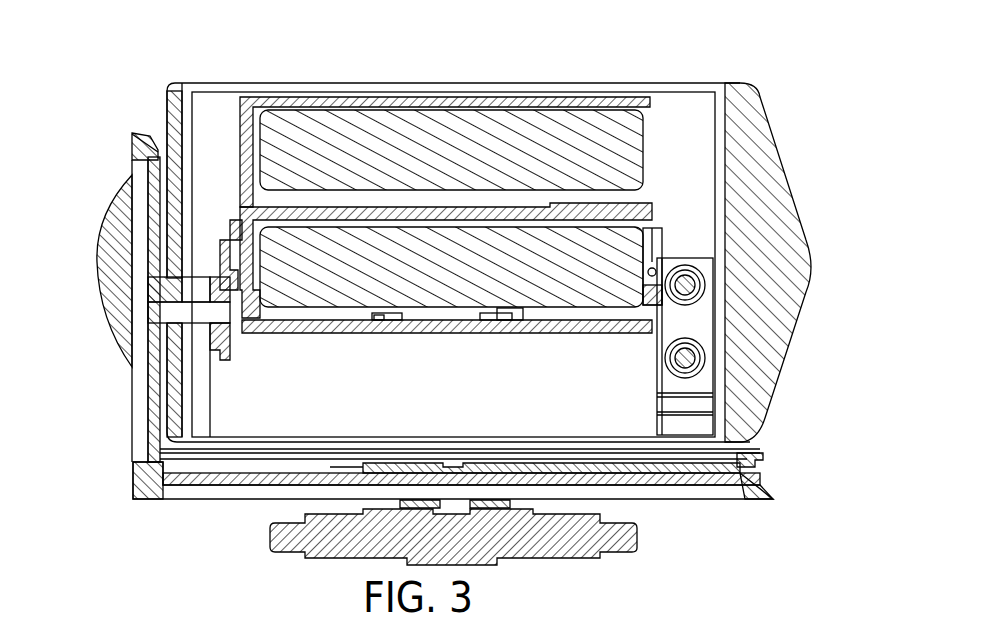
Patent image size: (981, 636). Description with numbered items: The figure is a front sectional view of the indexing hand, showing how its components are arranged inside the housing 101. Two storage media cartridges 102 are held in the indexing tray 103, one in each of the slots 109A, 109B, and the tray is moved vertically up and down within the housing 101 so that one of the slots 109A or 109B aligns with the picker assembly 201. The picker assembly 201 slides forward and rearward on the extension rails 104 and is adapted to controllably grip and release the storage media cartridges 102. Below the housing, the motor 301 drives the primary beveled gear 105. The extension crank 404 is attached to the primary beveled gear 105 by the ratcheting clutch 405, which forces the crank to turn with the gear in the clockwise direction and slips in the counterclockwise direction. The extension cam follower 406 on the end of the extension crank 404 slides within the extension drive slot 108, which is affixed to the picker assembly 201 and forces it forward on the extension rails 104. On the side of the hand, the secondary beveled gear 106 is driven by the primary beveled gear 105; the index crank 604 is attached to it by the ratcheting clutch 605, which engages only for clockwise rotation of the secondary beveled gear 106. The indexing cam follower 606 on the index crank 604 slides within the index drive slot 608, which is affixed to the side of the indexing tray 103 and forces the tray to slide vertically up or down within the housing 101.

The housing 101 is at (305, 83).
The storage media cartridges 102 is at (610, 263).
The indexing tray 103 is at (285, 323).
The extension rails 104 is at (697, 288).
The primary beveled gear 105 is at (177, 495).
The secondary beveled gear 106 is at (145, 410).
The extension drive slot 108 is at (725, 452).
The slot 109A is at (355, 315).
The slot 109B is at (488, 198).
The picker assembly 201 is at (694, 248).
The motor 301 is at (632, 552).
The extension crank 404 is at (660, 467).
The ratcheting clutch 405 is at (350, 477).
The extension cam follower 406 is at (765, 462).
The index crank 604 is at (152, 290).
The ratcheting clutch 605 is at (165, 335).
The indexing cam follower 606 is at (136, 165).
The index drive slot 608 is at (232, 262).